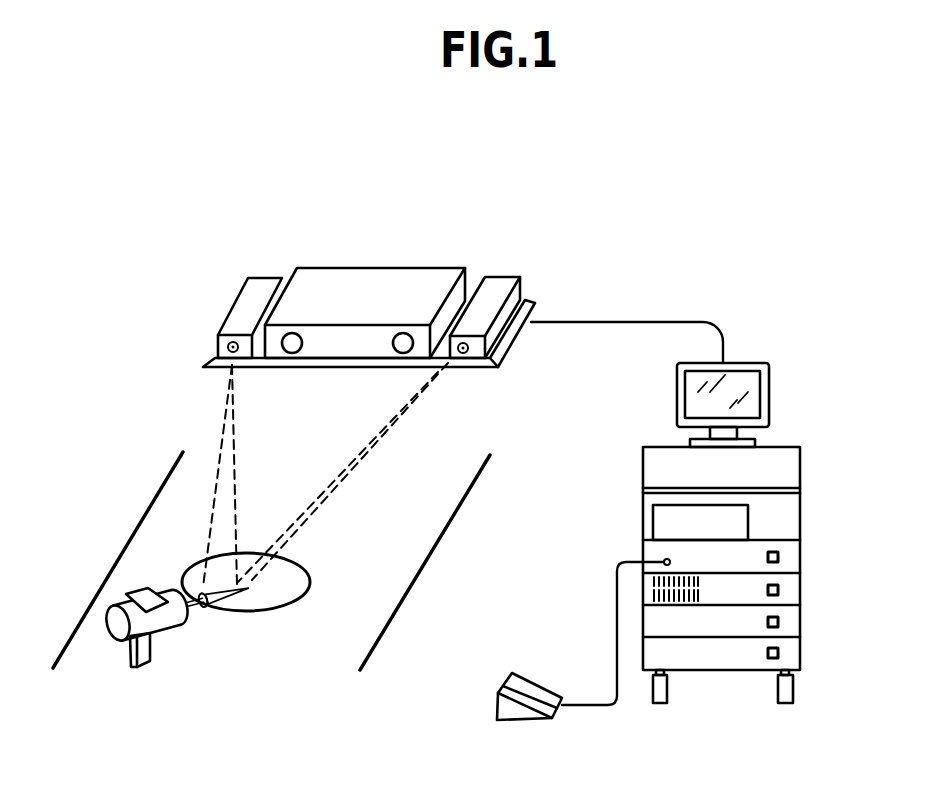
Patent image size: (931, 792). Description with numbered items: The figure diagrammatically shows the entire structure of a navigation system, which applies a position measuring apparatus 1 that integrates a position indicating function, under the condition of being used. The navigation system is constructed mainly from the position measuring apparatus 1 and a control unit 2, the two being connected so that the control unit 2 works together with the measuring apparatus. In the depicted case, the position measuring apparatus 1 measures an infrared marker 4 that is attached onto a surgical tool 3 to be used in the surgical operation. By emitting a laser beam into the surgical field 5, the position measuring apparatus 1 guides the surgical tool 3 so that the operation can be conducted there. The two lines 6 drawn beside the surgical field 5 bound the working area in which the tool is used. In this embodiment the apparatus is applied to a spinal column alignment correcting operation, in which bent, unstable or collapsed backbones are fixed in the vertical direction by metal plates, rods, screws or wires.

The position measuring apparatus 1 is at (398, 267).
The control unit 2 is at (802, 470).
The surgical tool 3 is at (172, 627).
The infrared marker 4 is at (140, 598).
The surgical field 5 is at (310, 578).
The working table 6 is at (427, 563).